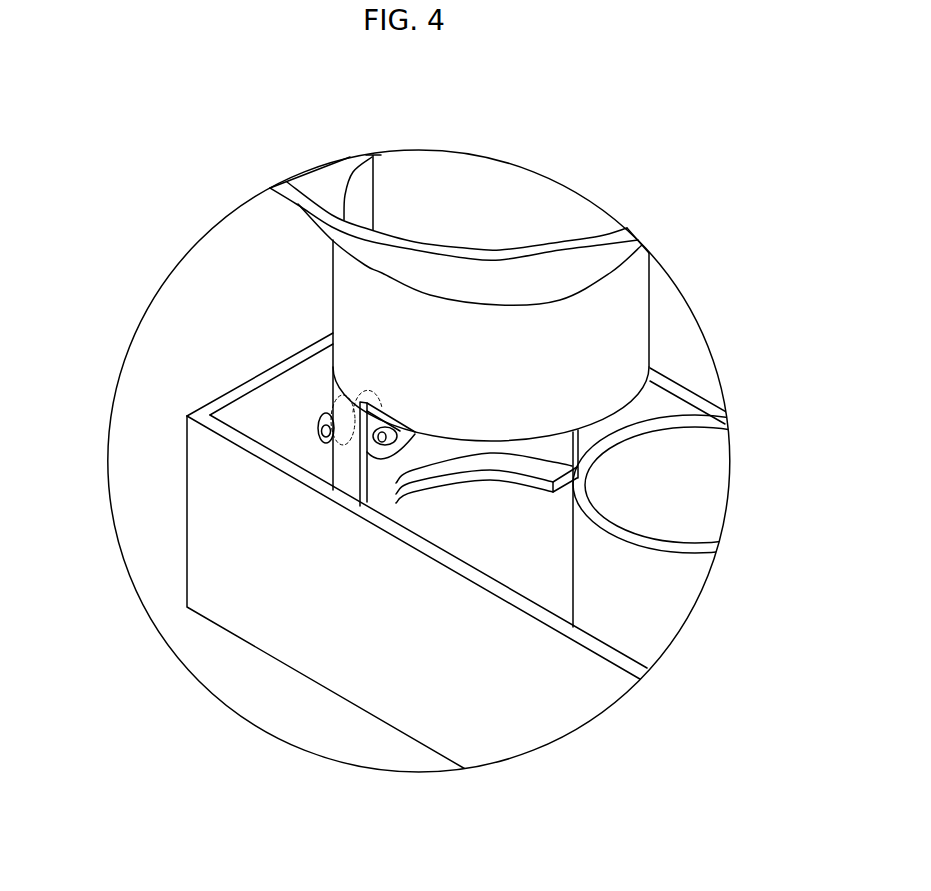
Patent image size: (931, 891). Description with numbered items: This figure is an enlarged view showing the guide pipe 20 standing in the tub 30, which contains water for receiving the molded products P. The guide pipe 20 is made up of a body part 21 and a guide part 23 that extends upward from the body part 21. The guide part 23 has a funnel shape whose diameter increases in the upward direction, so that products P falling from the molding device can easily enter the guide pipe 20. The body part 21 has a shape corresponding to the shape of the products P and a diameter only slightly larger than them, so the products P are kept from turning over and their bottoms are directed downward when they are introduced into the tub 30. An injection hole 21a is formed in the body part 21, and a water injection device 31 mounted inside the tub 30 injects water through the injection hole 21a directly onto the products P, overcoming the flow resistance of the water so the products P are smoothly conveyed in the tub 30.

The guide pipe 20 is at (536, 285).
The body part 21 is at (610, 358).
The guide part 23 is at (513, 268).
The injection hole 21a is at (399, 430).
The water injection device 31 is at (318, 430).
The tub 30 is at (263, 663).
The products P is at (677, 583).